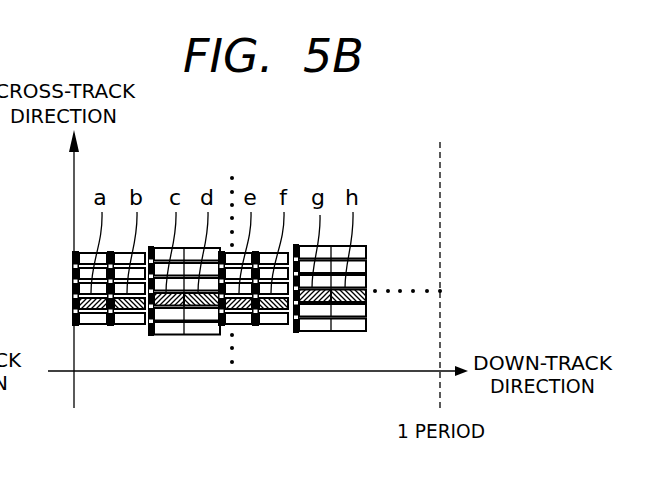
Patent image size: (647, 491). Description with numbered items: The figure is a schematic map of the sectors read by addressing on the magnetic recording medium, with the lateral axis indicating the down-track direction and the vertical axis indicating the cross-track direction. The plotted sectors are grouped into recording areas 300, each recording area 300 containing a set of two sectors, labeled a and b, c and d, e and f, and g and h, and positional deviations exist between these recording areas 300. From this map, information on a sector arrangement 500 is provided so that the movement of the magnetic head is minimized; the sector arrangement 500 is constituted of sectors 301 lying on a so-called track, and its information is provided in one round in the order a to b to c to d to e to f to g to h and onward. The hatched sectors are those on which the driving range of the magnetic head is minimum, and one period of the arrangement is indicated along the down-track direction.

The recording area 300 is at (82, 180).
The sector arrangement 500 is at (385, 312).
The sector 301 is at (345, 332).